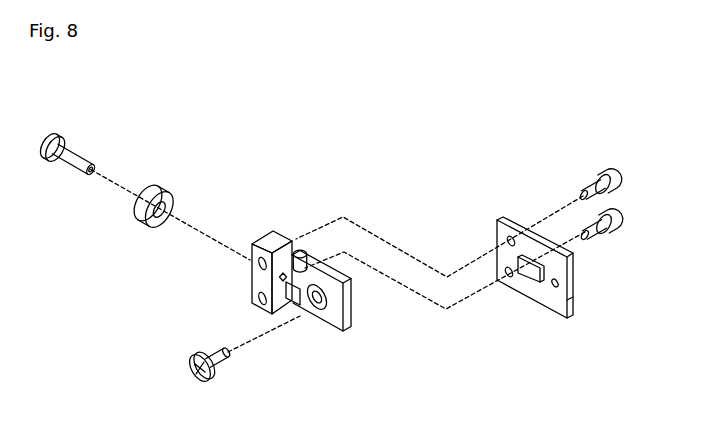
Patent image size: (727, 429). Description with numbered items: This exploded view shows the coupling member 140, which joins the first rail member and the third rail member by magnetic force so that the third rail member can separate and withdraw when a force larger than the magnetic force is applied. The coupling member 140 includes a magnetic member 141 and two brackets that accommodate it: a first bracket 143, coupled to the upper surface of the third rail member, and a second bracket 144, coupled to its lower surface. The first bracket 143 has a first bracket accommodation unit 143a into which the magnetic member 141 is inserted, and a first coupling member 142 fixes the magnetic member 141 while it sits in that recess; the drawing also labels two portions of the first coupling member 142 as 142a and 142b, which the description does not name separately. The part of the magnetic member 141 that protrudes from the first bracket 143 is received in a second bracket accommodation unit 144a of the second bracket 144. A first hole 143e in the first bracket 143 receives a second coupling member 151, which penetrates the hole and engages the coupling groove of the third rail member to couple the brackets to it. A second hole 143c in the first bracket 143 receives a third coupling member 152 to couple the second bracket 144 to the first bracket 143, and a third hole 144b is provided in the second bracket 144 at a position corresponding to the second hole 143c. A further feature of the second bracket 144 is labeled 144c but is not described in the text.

The coupling member 140 is at (362, 103).
The magnetic member 141 is at (165, 190).
The first coupling member 142 is at (131, 118).
The head portion of shaft pin 142a is at (106, 98).
The shaft portion of shaft pin 142b is at (86, 152).
The first bracket 143 is at (242, 293).
The first bracket accommodation unit 143a is at (305, 251).
The second hole 143c is at (250, 266).
The first hole 143e is at (310, 313).
The second bracket 144 is at (543, 325).
The second bracket accommodation unit 144a is at (523, 289).
The third hole 144b is at (509, 219).
The side portion 144c is at (564, 300).
The second coupling member 151 is at (219, 377).
The third coupling member 152 is at (589, 178).